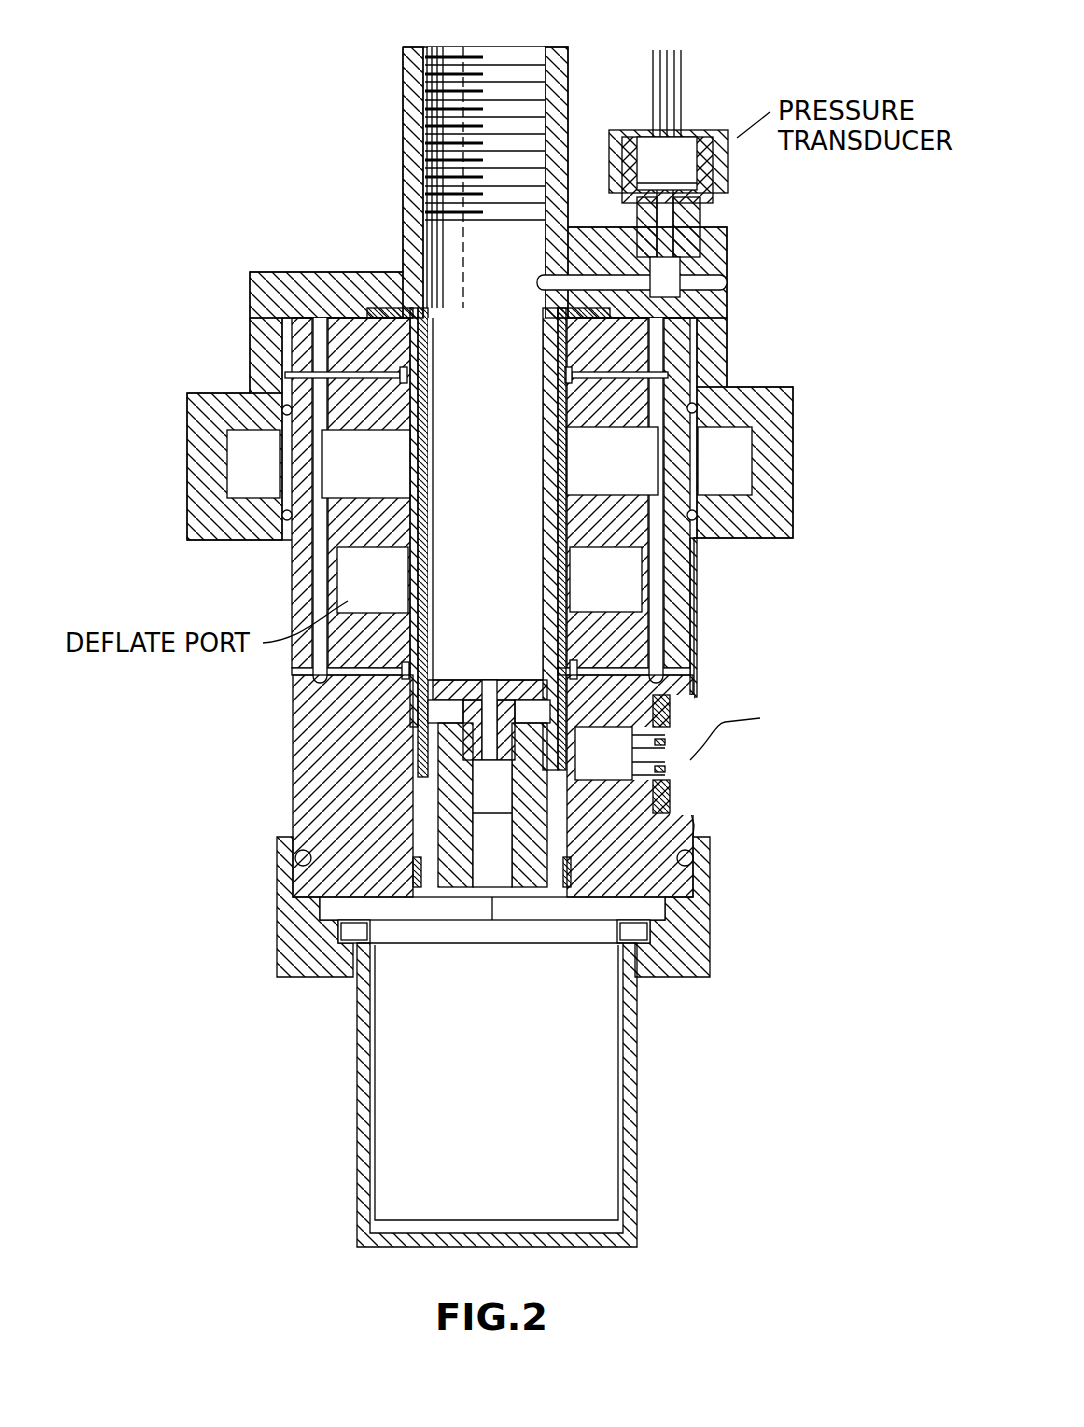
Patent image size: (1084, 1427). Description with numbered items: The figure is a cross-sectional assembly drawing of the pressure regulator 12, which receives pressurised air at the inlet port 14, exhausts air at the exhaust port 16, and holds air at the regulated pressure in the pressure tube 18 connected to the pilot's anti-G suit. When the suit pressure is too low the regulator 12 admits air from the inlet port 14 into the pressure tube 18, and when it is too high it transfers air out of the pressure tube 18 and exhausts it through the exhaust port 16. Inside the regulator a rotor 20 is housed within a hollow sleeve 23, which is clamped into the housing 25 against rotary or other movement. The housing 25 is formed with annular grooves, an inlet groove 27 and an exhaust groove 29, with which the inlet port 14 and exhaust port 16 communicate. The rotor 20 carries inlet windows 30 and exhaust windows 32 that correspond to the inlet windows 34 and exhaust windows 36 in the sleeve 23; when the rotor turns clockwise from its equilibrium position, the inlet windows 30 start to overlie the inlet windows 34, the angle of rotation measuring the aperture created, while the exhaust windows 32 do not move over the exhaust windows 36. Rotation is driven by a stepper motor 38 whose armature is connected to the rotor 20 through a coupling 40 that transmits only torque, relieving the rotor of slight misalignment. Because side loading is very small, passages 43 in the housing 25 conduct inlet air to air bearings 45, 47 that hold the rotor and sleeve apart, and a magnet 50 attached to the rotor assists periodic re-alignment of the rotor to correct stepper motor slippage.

The pressure regulator 12 is at (212, 931).
The inlet port 14 is at (245, 460).
The exhaust port 16 is at (290, 582).
The pressure tube 18 is at (425, 128).
The rotor 20 is at (430, 396).
The hollow sleeve 23 is at (542, 340).
The housing 25 is at (303, 757).
The inlet groove 27 is at (378, 473).
The exhaust groove 29 is at (390, 597).
The inlet windows 30 is at (426, 453).
The exhaust windows 32 is at (432, 575).
The inlet windows 34 is at (557, 468).
The exhaust windows 36 is at (555, 578).
The stepper motor 38 is at (602, 1105).
The coupling 40 is at (437, 808).
The passages 43 is at (330, 375).
The air bearing 45 is at (415, 336).
The air bearing 47 is at (557, 640).
The magnet 50 is at (566, 764).